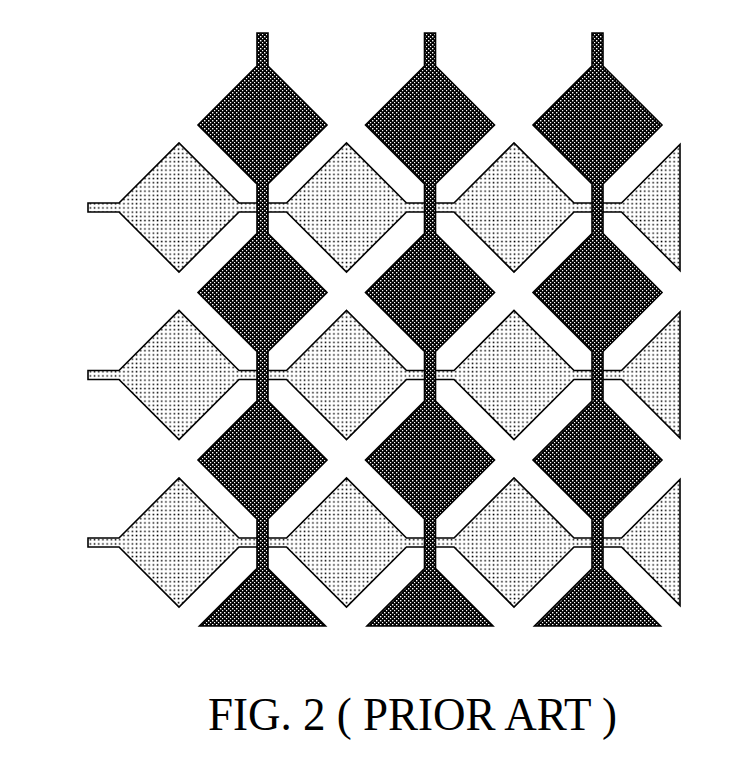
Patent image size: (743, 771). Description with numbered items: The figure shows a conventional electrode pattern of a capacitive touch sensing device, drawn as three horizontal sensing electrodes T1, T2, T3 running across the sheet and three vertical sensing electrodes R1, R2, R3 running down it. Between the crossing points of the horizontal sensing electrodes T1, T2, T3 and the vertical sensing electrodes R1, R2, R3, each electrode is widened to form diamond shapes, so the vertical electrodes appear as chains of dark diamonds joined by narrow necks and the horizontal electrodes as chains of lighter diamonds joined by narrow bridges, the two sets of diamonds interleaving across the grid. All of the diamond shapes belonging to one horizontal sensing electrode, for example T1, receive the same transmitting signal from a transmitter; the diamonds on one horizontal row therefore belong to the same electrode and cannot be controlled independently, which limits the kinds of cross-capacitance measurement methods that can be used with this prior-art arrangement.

The vertical sensing electrode R1 is at (262, 313).
The vertical sensing electrode R2 is at (430, 313).
The vertical sensing electrode R3 is at (597, 313).
The horizontal sensing electrode T1 is at (363, 207).
The horizontal sensing electrode T2 is at (363, 375).
The horizontal sensing electrode T3 is at (363, 542).